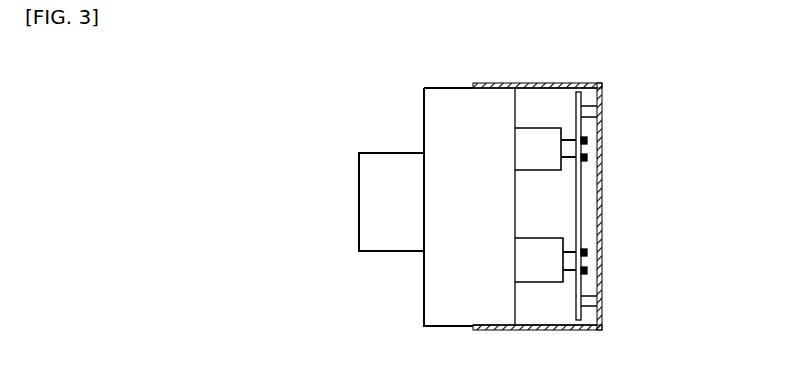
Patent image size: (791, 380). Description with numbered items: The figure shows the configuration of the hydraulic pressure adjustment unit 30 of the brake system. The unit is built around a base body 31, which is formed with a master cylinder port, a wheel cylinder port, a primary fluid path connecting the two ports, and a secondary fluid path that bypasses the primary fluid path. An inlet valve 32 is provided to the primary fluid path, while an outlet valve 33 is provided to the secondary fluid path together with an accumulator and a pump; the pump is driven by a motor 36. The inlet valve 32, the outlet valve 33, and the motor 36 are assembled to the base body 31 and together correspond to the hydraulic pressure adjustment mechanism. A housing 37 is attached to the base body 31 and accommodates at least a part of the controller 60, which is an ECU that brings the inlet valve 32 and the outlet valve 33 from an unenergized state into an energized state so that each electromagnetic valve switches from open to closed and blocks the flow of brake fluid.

The hydraulic pressure adjustment unit 30 is at (408, 83).
The base body 31 is at (439, 305).
The inlet valve 32 is at (561, 131).
The outlet valve 33 is at (562, 245).
The motor 36 is at (367, 170).
The housing 37 is at (603, 93).
The controller 60 is at (590, 312).